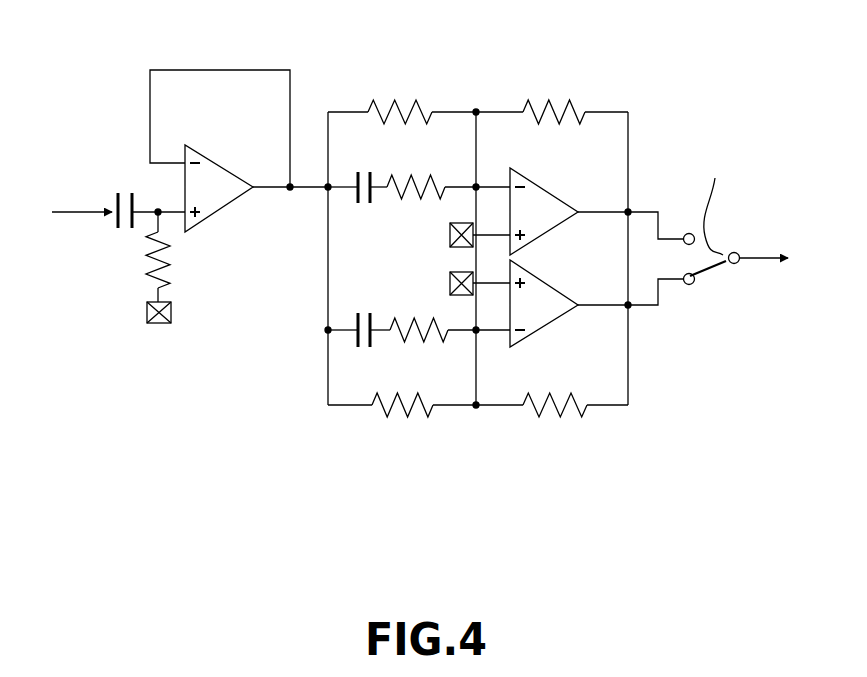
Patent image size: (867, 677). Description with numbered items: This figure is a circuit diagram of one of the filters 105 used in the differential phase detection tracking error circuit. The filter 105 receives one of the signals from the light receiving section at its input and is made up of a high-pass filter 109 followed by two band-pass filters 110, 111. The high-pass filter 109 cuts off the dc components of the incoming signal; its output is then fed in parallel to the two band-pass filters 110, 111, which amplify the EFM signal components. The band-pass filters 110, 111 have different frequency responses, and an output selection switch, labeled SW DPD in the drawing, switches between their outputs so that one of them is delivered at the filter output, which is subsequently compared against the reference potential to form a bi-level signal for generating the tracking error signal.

The filter 105 is at (234, 400).
The high-pass filter 109 is at (152, 182).
The band-pass filter 110 is at (458, 101).
The band-pass filter 111 is at (499, 425).